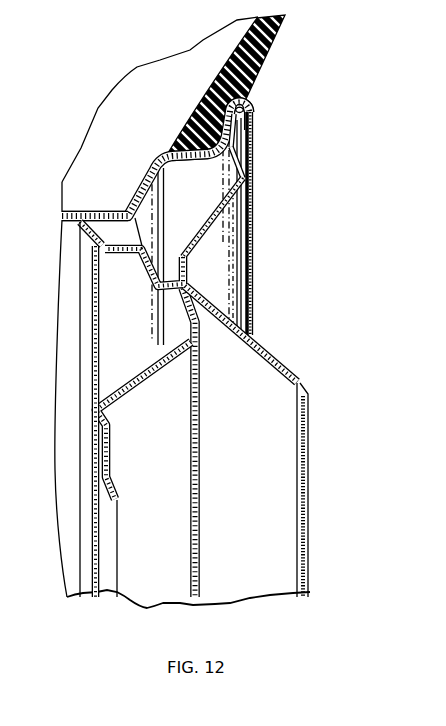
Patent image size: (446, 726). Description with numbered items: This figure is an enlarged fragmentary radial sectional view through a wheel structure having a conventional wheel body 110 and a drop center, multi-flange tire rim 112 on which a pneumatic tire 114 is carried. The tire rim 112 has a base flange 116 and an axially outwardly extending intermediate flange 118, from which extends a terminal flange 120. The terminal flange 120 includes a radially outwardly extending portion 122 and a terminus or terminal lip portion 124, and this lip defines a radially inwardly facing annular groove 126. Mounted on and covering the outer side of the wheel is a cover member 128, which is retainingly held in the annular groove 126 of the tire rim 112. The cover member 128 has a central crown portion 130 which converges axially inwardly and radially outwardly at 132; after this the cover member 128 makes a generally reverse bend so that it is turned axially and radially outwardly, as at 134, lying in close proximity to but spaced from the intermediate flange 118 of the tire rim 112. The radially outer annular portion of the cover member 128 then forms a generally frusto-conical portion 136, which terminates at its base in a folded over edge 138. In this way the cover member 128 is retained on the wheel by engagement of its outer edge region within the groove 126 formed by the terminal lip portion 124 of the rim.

The wheel body 110 is at (87, 555).
The tire rim 112 is at (131, 183).
The pneumatic tire 114 is at (200, 81).
The base flange 116 is at (88, 211).
The intermediate flange 118 is at (180, 159).
The terminal flange 120 is at (250, 94).
The radially outwardly extending portion 122 is at (250, 126).
The terminal lip portion 124 is at (253, 100).
The annular groove 126 is at (252, 120).
The cover member 128 is at (316, 483).
The central crown portion 130 is at (294, 380).
The converging portion 132 is at (248, 175).
The reverse bend portion 134 is at (248, 152).
The frusto-conical portion 136 is at (248, 135).
The folded over edge 138 is at (252, 111).